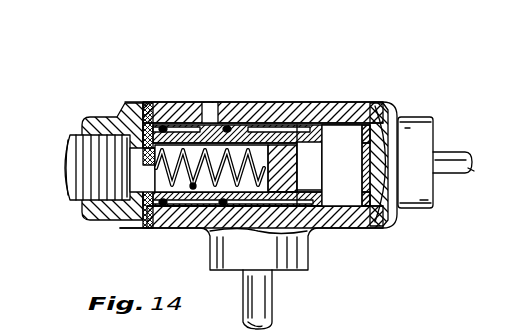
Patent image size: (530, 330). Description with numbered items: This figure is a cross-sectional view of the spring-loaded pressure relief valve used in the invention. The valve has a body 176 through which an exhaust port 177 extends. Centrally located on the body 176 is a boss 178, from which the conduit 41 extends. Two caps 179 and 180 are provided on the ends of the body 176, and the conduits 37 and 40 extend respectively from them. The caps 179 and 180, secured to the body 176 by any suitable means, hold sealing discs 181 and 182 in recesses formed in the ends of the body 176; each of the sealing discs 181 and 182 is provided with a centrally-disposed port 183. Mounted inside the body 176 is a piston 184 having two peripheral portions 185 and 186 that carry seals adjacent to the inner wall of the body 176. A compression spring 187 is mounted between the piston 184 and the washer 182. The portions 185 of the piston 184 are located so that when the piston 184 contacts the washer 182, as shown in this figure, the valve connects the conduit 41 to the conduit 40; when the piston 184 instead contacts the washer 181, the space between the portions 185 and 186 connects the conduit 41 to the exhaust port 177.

The conduit 37 is at (68, 140).
The conduit 40 is at (457, 150).
The conduit 41 is at (272, 303).
The body 176 is at (337, 101).
The exhaust port 177 is at (208, 116).
The boss 178 is at (213, 261).
The cap 179 is at (100, 116).
The cap 180 is at (423, 116).
The sealing disc 181 is at (371, 224).
The sealing disc 182 is at (149, 206).
The centrally-disposed ports 183 is at (366, 167).
The piston 184 is at (288, 190).
The peripheral portion 185 is at (228, 126).
The peripheral portion 186 is at (164, 126).
The compression spring 187 is at (193, 188).